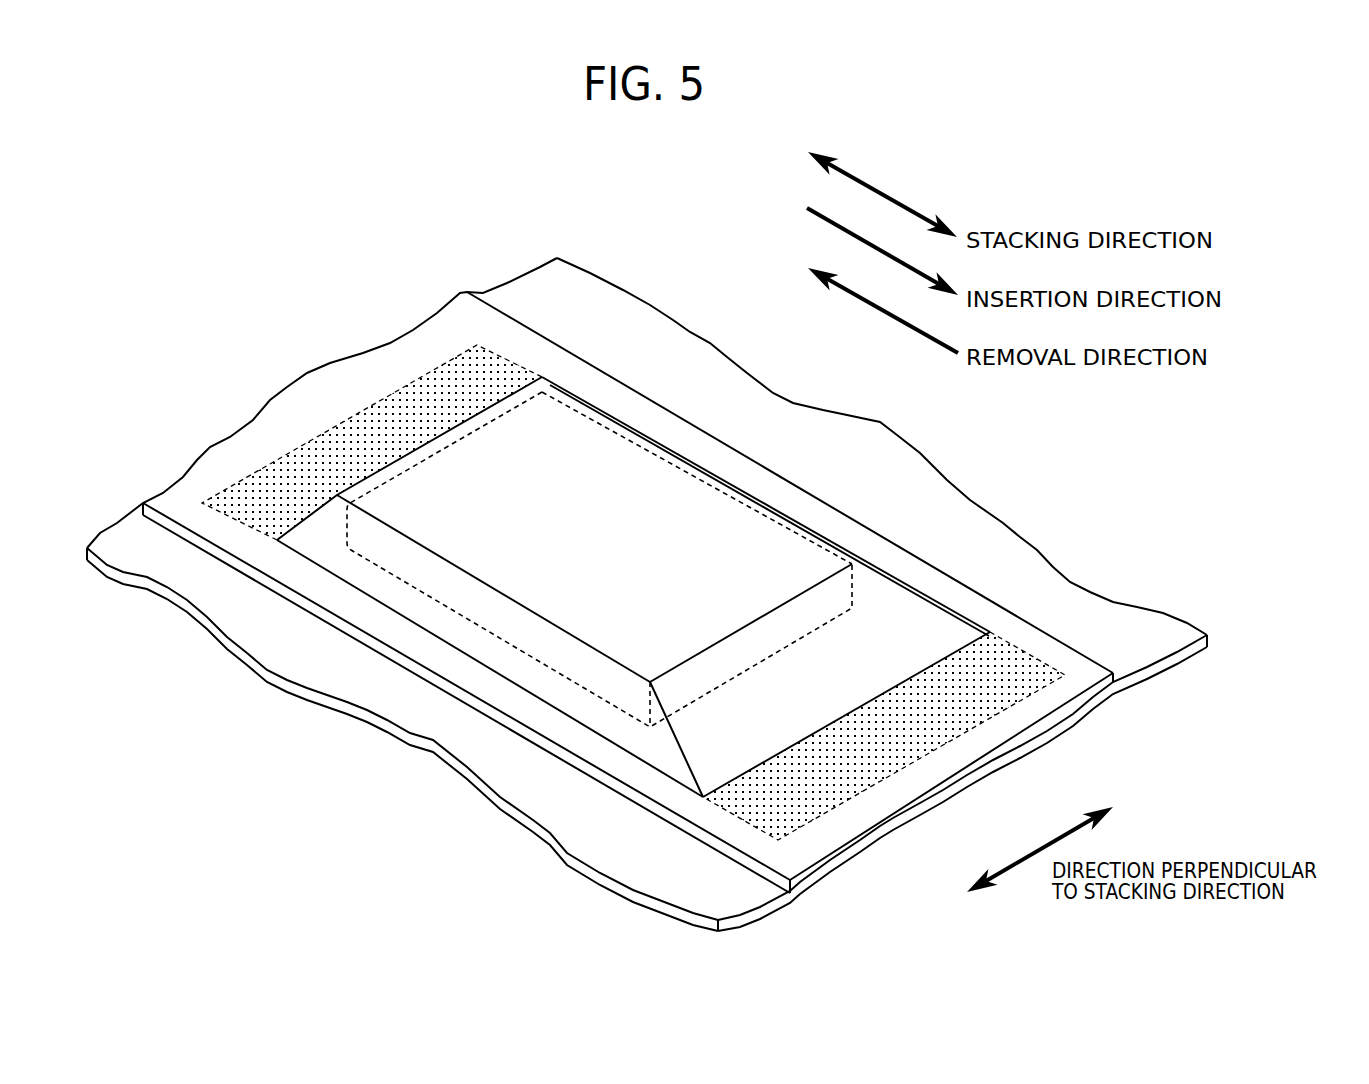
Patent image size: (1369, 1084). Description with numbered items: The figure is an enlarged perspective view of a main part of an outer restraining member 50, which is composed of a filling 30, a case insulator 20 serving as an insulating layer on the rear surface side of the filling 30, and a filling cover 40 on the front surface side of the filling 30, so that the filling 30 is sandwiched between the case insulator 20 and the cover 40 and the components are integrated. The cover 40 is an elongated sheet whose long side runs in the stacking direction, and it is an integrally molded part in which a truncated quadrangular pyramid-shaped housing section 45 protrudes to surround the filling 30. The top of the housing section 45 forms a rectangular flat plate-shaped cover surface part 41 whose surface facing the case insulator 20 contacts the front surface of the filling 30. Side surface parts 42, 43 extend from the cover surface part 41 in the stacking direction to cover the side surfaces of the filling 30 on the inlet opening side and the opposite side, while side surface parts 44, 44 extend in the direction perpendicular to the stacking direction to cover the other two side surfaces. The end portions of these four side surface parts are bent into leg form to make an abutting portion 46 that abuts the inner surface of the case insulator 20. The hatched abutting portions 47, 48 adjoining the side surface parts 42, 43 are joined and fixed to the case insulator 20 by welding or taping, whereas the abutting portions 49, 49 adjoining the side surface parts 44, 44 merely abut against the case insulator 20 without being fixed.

The case insulator 20 is at (647, 344).
The filling 30 is at (852, 597).
The filling cover 40 is at (1040, 645).
The cover surface part 41 is at (594, 646).
The side surface part 42 is at (877, 648).
The side surface part 43 is at (280, 552).
The side surface part 44 is at (687, 460).
The housing section 45 is at (590, 480).
The abutting portion 46 is at (647, 745).
The abutting portion 47 is at (947, 700).
The abutting portion 48 is at (358, 437).
The abutting portion 49 is at (810, 512).
The outer restraining member 50 is at (396, 283).